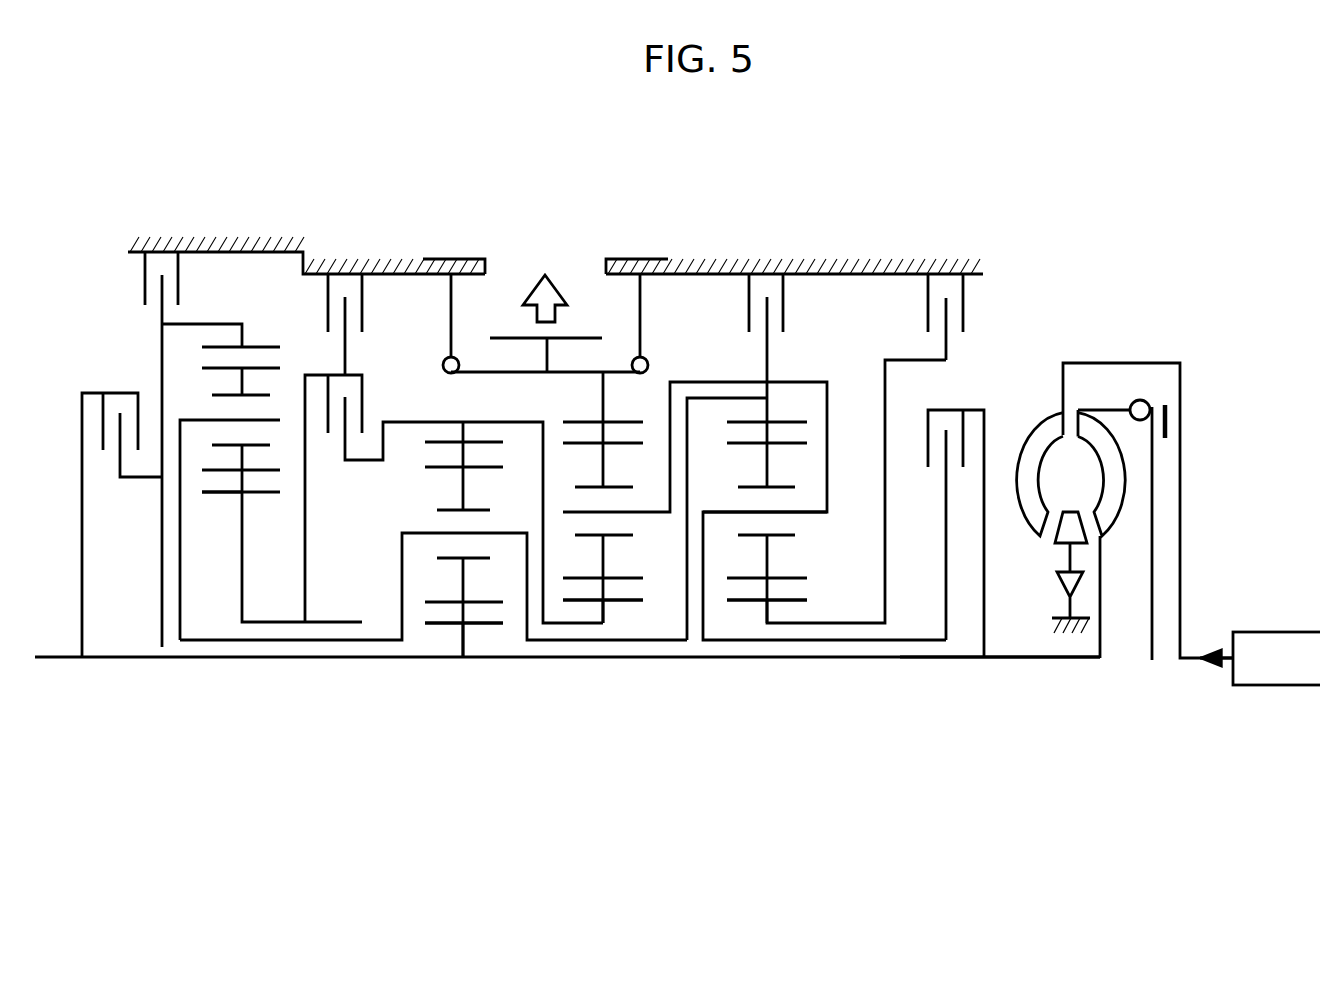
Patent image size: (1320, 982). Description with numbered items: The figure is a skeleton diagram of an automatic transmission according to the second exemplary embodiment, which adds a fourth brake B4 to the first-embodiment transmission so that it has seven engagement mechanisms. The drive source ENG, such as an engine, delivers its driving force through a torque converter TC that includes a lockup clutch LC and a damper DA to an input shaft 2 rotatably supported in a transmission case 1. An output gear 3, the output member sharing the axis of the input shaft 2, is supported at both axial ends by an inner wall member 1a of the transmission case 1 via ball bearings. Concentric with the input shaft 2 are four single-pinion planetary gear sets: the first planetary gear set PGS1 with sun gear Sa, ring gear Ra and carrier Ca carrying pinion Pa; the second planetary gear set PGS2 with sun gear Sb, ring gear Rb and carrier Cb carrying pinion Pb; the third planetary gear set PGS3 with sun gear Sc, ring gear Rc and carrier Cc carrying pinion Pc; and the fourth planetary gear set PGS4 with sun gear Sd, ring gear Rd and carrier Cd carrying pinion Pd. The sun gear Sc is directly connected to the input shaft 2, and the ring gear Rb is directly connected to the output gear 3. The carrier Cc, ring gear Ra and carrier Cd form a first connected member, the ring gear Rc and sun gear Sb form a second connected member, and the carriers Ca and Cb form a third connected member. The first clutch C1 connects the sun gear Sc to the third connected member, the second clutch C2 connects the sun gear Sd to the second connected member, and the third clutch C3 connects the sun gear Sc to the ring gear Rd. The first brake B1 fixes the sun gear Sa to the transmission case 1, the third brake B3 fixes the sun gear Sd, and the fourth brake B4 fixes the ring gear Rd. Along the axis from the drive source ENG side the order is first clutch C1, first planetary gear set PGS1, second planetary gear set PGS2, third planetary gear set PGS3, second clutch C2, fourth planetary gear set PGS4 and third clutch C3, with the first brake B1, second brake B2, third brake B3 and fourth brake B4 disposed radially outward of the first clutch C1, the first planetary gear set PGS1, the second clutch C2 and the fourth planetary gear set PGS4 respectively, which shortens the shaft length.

The transmission case 1 is at (210, 236).
The inner wall member 1a is at (455, 258).
The input shaft 2 is at (1017, 660).
The output gear 3 is at (586, 338).
The first brake B1 is at (973, 305).
The second brake B2 is at (792, 320).
The third brake B3 is at (368, 320).
The fourth brake B4 is at (128, 280).
The first clutch C1 is at (950, 405).
The second clutch C2 is at (338, 468).
The third clutch C3 is at (100, 388).
The first planetary gear set PGS1 is at (820, 505).
The second planetary gear set PGS2 is at (733, 545).
The third planetary gear set PGS3 is at (433, 570).
The fourth planetary gear set PGS4 is at (262, 452).
The sun gear Sa is at (783, 622).
The carrier Ca is at (810, 512).
The ring gear Ra is at (775, 422).
The pinion Pa is at (800, 578).
The sun gear Sb is at (622, 612).
The carrier Cb is at (630, 512).
The ring gear Rb is at (620, 422).
The pinion Pb is at (630, 578).
The sun gear Sc is at (488, 630).
The carrier Cc is at (527, 533).
The ring gear Rc is at (432, 442).
The pinion Pc is at (470, 602).
The sun gear Sd is at (217, 492).
The carrier Cd is at (195, 420).
The ring gear Rd is at (265, 347).
The pinion Pd is at (262, 492).
The torque converter TC is at (1045, 405).
The damper DA is at (1147, 388).
The lockup clutch LC is at (1170, 418).
The drive source ENG is at (1260, 658).